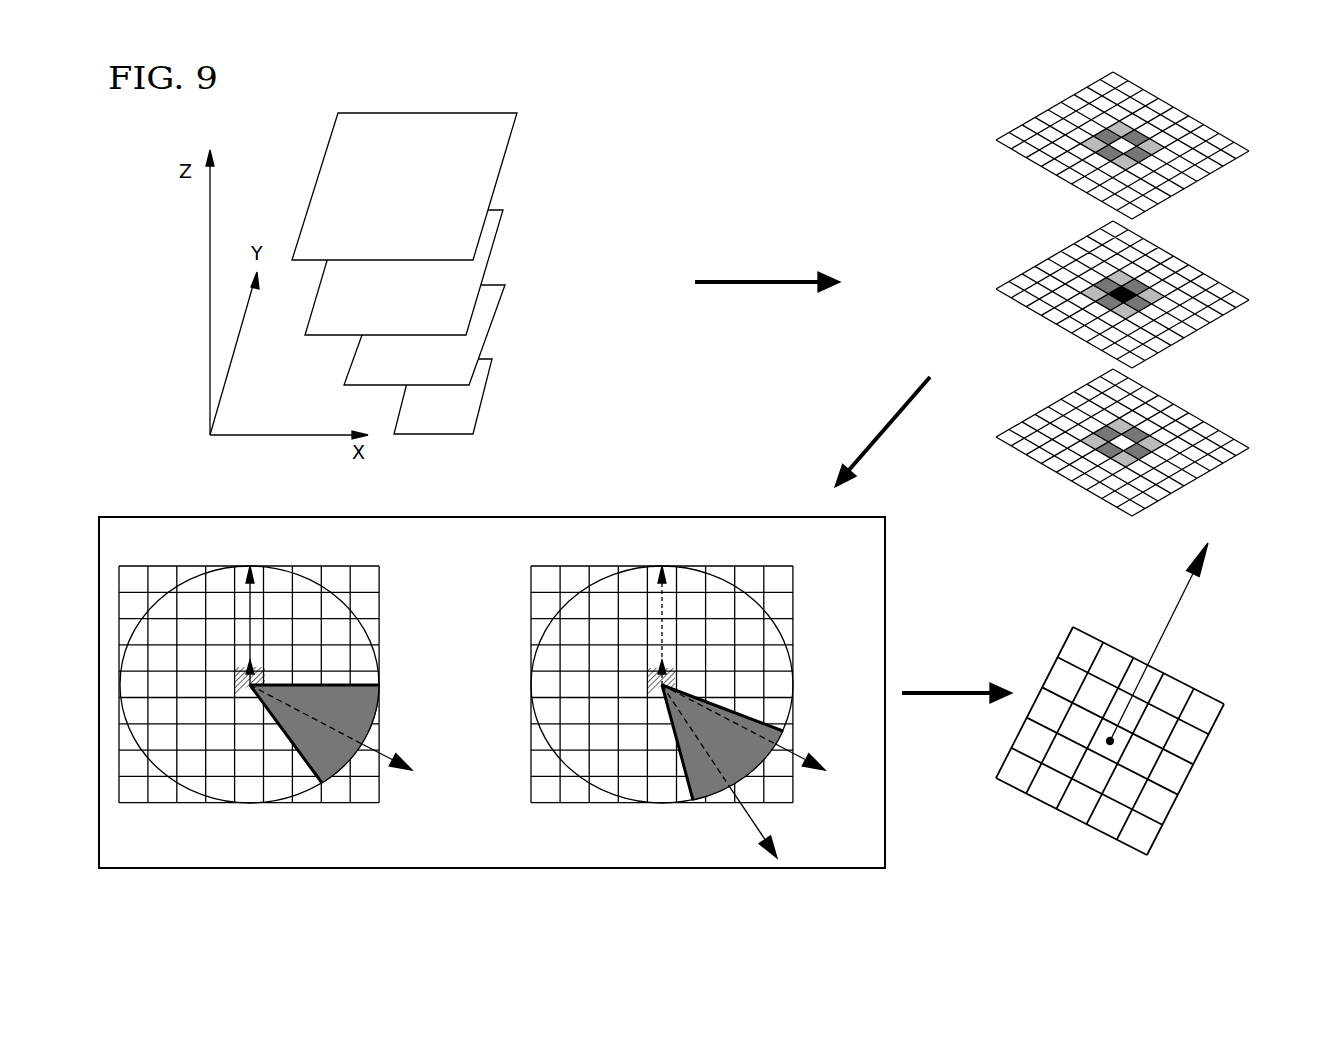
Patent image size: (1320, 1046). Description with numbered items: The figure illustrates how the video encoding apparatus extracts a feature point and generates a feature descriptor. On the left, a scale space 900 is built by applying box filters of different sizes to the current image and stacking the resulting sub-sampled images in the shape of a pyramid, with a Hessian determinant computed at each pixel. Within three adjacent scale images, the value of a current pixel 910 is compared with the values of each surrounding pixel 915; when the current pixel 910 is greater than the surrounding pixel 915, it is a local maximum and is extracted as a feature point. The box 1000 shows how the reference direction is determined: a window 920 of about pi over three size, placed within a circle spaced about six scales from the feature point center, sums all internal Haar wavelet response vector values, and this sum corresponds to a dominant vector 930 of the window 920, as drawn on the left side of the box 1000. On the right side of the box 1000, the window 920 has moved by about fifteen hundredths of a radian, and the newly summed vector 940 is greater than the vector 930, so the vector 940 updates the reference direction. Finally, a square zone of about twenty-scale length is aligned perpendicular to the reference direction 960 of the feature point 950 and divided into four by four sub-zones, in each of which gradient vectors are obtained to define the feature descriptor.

The scale space 900 is at (483, 393).
The current pixel 910 is at (1125, 296).
The surrounding pixel 915 is at (1096, 444).
The window 920 is at (380, 689).
The dominant vector 930 is at (378, 745).
The vector 940 is at (753, 820).
The feature point 950 is at (1111, 741).
The reference direction 960 is at (1175, 605).
The box 1000 is at (493, 517).